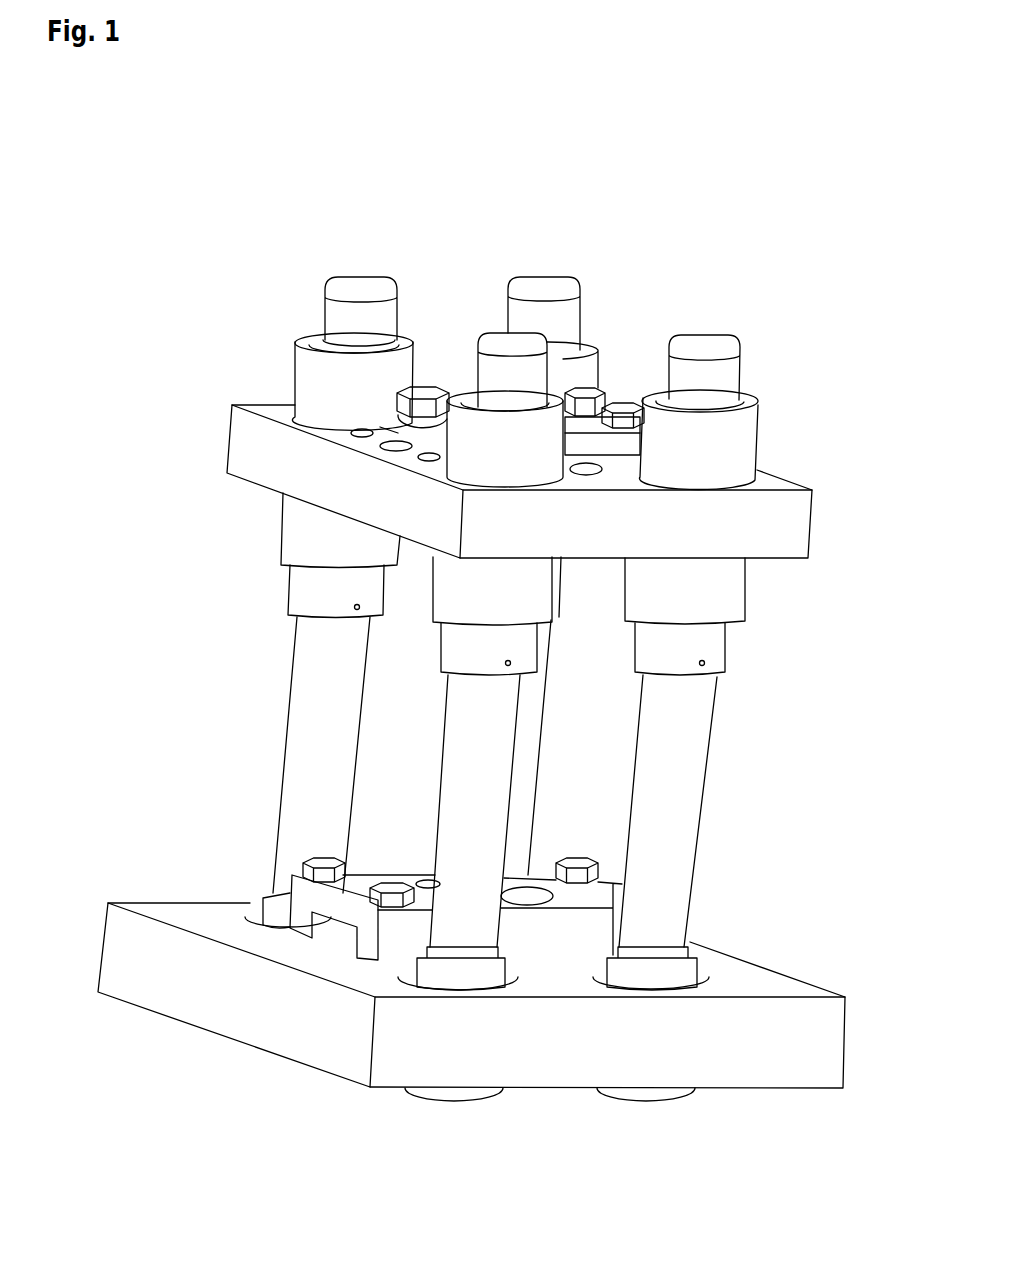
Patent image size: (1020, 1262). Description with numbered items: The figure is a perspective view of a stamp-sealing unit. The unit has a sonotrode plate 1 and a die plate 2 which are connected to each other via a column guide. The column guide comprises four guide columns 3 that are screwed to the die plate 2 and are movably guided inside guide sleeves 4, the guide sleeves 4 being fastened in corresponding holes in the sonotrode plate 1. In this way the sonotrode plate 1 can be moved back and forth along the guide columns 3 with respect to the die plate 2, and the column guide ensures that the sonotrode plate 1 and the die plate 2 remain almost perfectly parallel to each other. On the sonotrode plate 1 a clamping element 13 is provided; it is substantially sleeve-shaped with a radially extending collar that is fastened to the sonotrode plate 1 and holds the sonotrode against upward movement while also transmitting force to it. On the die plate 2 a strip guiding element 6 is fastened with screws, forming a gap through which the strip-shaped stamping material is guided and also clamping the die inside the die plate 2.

The sonotrode plate 1 is at (803, 505).
The die plate 2 is at (390, 1067).
The guide columns 3 is at (307, 680).
The guide sleeves 4 is at (307, 375).
The strip guiding element 6 is at (300, 897).
The clamping element 13 is at (403, 423).